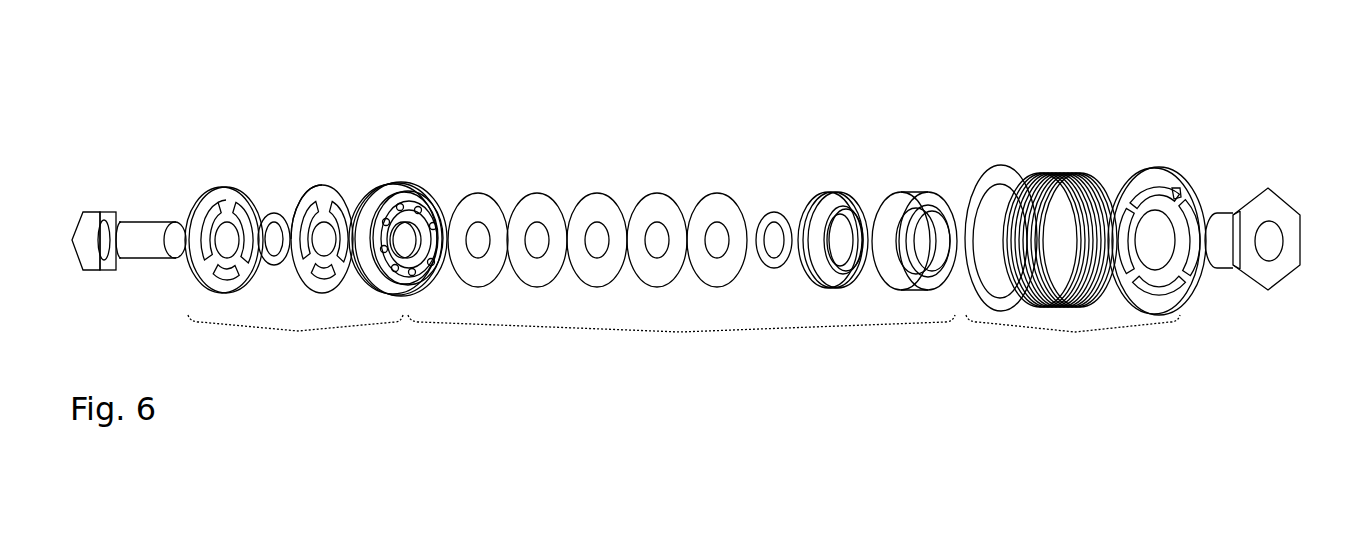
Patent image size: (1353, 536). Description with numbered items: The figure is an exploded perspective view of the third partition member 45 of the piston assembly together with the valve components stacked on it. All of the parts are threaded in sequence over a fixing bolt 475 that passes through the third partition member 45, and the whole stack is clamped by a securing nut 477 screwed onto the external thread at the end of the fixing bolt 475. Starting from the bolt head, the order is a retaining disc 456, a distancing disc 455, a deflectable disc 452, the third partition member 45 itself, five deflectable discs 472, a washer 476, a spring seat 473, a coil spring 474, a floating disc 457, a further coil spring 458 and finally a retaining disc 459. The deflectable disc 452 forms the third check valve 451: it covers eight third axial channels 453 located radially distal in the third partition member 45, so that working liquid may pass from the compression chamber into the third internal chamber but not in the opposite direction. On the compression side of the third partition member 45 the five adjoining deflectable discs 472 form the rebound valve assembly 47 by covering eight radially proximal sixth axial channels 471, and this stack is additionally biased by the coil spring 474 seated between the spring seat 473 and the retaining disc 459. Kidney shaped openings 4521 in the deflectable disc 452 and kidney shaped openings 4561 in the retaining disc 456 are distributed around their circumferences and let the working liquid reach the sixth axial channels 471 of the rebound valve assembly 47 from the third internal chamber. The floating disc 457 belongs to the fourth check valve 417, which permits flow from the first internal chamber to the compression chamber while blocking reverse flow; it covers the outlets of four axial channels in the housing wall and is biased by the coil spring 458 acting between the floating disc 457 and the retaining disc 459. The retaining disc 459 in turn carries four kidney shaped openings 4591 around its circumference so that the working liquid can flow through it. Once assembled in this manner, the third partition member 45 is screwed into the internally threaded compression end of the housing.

The fixing bolt 475 is at (141, 238).
The retaining disc 456 is at (217, 200).
The kidney shaped openings 4561 is at (208, 196).
The distancing disc 455 is at (265, 212).
The deflectable disc 452 is at (322, 206).
The kidney shaped openings 4521 is at (350, 204).
The third partition member 45 is at (413, 192).
The third axial channels 453 is at (440, 230).
The sixth axial channels 471 is at (443, 236).
The deflectable discs 472 is at (713, 210).
The washer 476 is at (765, 211).
The spring seat 473 is at (830, 200).
The coil spring 474 is at (910, 200).
The floating disc 457 is at (1011, 178).
The coil spring 458 is at (1067, 176).
The retaining disc 459 is at (1145, 178).
The kidney shaped openings 4591 is at (1169, 194).
The securing nut 477 is at (1215, 214).
The third check valve 451 is at (295, 341).
The rebound valve assembly 47 is at (681, 341).
The fourth check valve 417 is at (1073, 341).